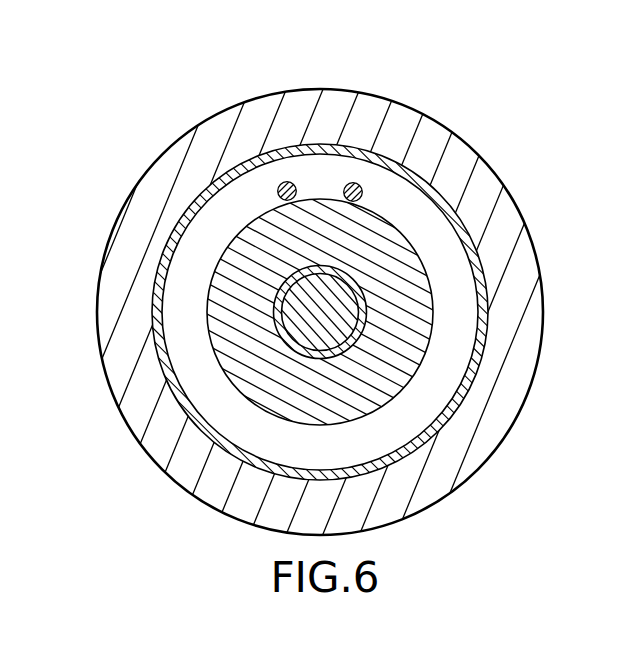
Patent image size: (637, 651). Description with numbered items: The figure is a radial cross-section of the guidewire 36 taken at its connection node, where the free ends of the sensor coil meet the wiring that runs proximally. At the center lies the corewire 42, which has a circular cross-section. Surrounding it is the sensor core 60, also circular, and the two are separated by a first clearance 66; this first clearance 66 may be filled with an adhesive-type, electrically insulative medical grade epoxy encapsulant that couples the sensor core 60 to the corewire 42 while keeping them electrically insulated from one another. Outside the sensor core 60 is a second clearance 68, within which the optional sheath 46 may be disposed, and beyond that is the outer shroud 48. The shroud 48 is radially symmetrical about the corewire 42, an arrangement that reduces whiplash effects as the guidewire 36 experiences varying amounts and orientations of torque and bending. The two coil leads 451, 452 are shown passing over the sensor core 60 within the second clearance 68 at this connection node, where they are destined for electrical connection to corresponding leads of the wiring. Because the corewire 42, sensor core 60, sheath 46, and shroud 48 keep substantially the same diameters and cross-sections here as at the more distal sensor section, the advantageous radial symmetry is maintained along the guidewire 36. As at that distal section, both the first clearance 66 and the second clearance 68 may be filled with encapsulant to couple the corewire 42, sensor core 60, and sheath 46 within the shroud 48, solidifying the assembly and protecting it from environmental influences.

The guidewire 36 is at (219, 78).
The shroud 48 is at (405, 133).
The sheath 46 is at (428, 181).
The second clearance 68 is at (202, 228).
The coil lead 451 is at (278, 194).
The coil lead 452 is at (362, 192).
The sensor core 60 is at (400, 263).
The first clearance 66 is at (370, 315).
The corewire 42 is at (303, 323).